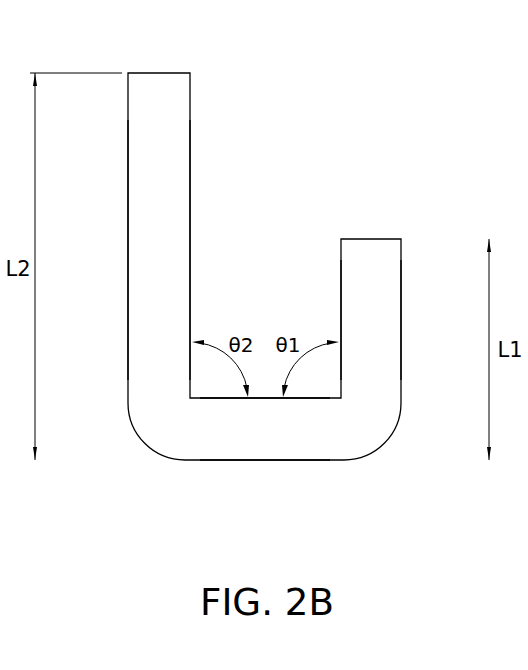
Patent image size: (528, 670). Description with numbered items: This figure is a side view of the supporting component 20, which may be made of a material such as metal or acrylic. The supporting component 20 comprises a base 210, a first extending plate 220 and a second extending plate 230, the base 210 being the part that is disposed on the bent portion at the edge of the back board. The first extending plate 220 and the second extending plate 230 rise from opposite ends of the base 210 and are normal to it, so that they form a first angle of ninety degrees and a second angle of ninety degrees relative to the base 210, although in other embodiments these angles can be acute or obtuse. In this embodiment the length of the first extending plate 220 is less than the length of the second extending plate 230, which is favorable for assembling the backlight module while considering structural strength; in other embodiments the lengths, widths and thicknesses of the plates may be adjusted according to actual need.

The supporting component 20 is at (280, 46).
The base 210 is at (271, 444).
The first extending plate 220 is at (377, 331).
The second extending plate 230 is at (147, 251).